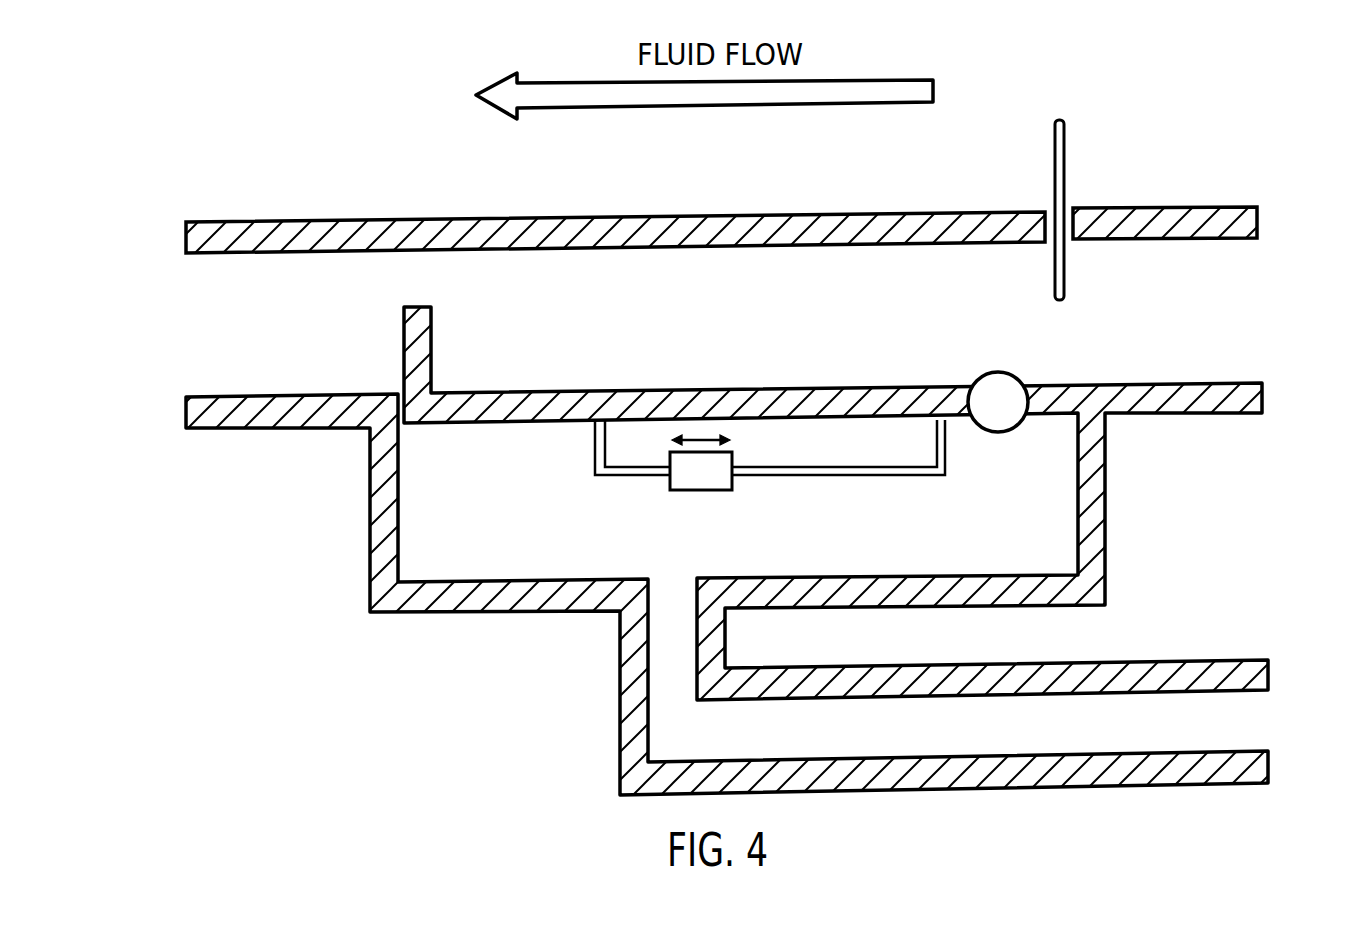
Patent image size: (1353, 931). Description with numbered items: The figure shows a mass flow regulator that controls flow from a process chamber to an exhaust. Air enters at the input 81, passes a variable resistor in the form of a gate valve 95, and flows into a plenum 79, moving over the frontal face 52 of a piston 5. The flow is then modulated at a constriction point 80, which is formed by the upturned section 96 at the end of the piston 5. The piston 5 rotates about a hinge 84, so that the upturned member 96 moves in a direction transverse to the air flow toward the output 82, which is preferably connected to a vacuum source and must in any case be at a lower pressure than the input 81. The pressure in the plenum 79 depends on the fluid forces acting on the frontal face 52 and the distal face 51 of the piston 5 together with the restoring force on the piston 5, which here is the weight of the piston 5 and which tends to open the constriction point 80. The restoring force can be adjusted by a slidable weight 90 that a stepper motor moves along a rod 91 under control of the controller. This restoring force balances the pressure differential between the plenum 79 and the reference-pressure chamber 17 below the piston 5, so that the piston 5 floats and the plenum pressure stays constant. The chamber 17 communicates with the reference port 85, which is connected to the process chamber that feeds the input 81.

The piston 5 is at (856, 392).
The reference-pressure chamber 17 is at (529, 504).
The distal face 51 is at (488, 423).
The frontal face 52 is at (483, 393).
The plenum 79 is at (667, 330).
The constriction point 80 is at (436, 302).
The input 81 is at (1215, 325).
The output 82 is at (222, 351).
The hinge 84 is at (982, 417).
The reference port 85 is at (1317, 736).
The slidable weight 90 is at (684, 485).
The rod 91 is at (822, 472).
The gate valve 95 is at (1114, 154).
The upturned section 96 is at (417, 353).